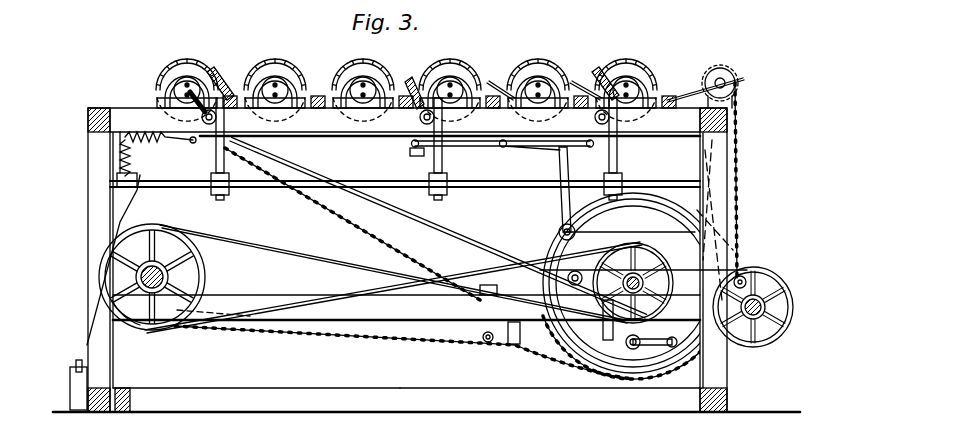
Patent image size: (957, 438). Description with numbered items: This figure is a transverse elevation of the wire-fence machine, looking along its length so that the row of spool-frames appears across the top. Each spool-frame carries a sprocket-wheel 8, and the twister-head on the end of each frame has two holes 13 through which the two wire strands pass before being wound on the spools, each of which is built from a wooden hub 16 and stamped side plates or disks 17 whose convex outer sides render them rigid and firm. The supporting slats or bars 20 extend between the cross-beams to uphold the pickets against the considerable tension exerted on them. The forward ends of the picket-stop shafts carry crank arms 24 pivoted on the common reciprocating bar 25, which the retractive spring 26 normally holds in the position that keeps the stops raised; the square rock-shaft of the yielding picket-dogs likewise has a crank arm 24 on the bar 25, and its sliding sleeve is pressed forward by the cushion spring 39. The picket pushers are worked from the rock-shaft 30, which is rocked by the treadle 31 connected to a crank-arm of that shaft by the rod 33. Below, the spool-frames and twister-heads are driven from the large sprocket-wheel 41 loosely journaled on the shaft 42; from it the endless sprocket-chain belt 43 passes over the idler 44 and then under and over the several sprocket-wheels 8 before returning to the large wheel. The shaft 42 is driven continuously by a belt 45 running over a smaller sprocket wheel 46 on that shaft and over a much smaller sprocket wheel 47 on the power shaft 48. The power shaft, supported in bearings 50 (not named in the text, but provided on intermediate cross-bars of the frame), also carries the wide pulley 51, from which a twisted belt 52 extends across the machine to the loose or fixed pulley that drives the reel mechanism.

The sprocket-wheel 8 is at (205, 80).
The holes 13 is at (276, 88).
The supporting slats or bars 20 is at (513, 73).
The crank arms 24 is at (417, 156).
The common reciprocating bar 25 is at (393, 144).
The retractive spring 26 is at (143, 128).
The rock-shaft 30 is at (348, 187).
The treadle 31 is at (70, 390).
The rod 33 is at (80, 344).
The cushion spring 39 is at (137, 167).
The large sprocket-wheel 41 is at (653, 370).
The shaft 42 is at (613, 370).
The endless sprocket-chain belt 43 is at (737, 193).
The idler 44 is at (730, 83).
The belt 45 is at (449, 340).
The smaller sprocket wheel 46 is at (540, 253).
The much smaller sprocket wheel 47 is at (197, 275).
The power shaft 48 is at (173, 323).
The horizontal bar 50 is at (313, 300).
The wide pulley 51 is at (140, 326).
The twisted belt 52 is at (338, 274).
The wooden hubs 16 is at (525, 413).
The stamped side plates or disks 17 is at (256, 413).